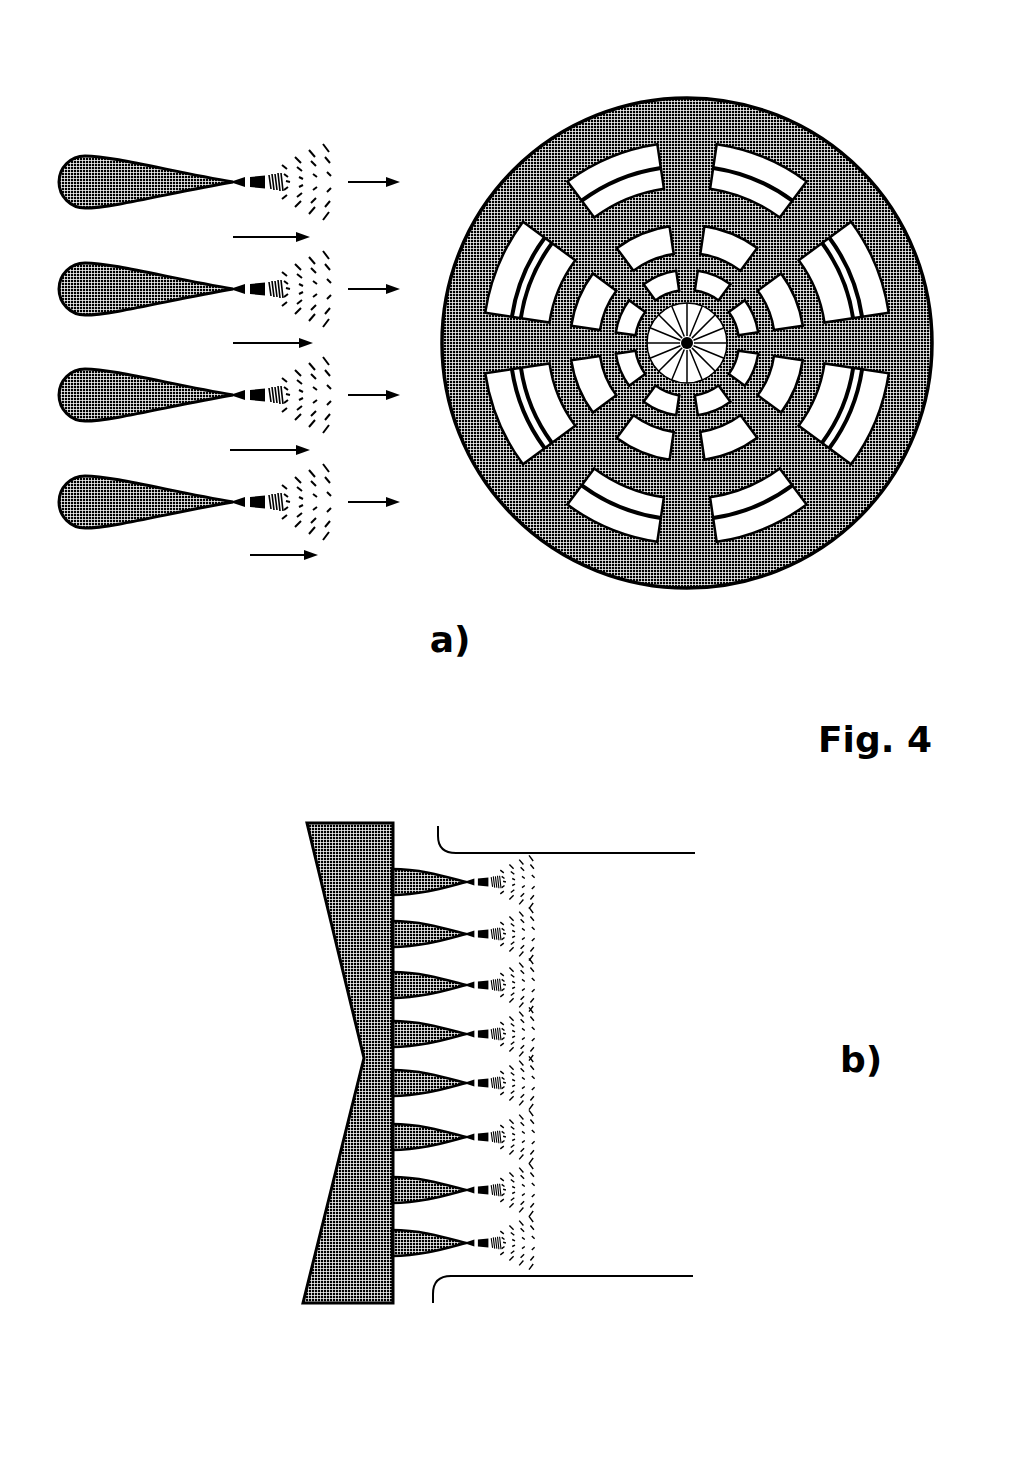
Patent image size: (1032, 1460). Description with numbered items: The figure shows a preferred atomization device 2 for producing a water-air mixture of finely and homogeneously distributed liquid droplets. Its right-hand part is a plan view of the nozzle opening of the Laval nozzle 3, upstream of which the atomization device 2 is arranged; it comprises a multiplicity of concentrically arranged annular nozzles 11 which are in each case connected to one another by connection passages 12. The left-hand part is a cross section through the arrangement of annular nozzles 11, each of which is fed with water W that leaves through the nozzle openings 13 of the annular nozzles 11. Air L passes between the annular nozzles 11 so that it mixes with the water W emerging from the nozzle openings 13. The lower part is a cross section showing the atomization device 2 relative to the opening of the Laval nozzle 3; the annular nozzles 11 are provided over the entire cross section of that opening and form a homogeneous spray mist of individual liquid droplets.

The atomization device 2 is at (737, 222).
The Laval nozzle 3 is at (635, 170).
The annular nozzles 11 is at (212, 151).
The connection passages 12 is at (555, 222).
The nozzle openings 13 is at (233, 515).
The water W is at (88, 508).
The air L is at (255, 342).